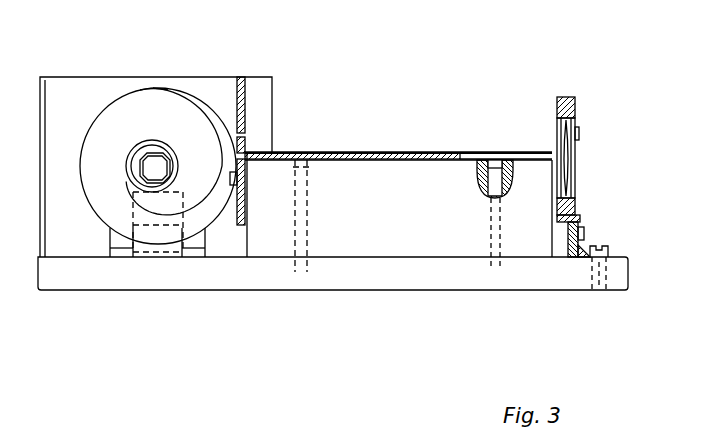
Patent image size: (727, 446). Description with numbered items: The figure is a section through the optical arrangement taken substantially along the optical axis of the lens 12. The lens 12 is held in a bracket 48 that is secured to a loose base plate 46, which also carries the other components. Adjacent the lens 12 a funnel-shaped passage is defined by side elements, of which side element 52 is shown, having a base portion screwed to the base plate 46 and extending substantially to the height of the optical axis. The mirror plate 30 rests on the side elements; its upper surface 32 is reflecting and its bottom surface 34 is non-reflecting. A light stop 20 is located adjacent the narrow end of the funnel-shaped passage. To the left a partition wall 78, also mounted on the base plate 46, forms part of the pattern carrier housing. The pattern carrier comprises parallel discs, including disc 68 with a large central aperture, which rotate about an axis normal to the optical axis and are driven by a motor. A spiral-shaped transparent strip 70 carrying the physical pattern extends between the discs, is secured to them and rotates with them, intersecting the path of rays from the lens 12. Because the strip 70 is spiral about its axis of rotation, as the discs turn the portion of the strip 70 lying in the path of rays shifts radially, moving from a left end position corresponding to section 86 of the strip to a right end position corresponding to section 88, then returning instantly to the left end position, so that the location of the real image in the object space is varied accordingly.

The lens 12 is at (567, 178).
The light stop 20 is at (243, 137).
The mirror plate 30 is at (412, 160).
The table top surface 32 is at (463, 140).
The table bottom surface 34 is at (436, 174).
The base plate 46 is at (138, 286).
The bracket 48 is at (580, 225).
The side element 52 is at (356, 229).
The disc 68 is at (142, 105).
The spiral-shaped transparent strip 70 is at (215, 137).
The partition wall 78 is at (74, 102).
The section of the strip 86 is at (157, 142).
The section of the strip 88 is at (159, 88).